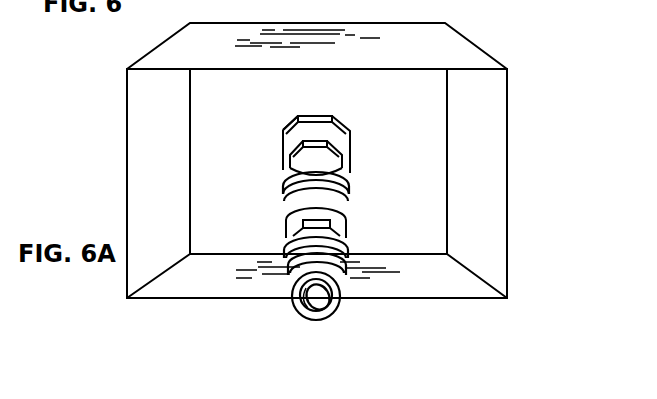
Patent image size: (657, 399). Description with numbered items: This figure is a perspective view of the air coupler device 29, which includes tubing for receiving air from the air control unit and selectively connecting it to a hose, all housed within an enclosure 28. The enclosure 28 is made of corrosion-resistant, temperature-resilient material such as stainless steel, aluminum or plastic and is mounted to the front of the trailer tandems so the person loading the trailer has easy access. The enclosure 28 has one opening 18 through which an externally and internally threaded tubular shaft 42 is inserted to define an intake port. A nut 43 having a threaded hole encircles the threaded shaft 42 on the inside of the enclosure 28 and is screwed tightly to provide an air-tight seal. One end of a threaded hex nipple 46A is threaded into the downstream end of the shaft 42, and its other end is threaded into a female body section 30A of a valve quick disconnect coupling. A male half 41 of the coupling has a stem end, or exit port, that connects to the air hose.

The opening 18 is at (331, 112).
The enclosure 28 is at (472, 45).
The air coupler device 29 is at (445, 24).
The female body section of valve quick disconnect coupling 30A is at (283, 188).
The male half of valve quick disconnect coupling 41 is at (290, 258).
The threaded tubular shaft 42 is at (298, 143).
The nut 43 is at (283, 129).
The threaded hex nipple 46A is at (290, 157).